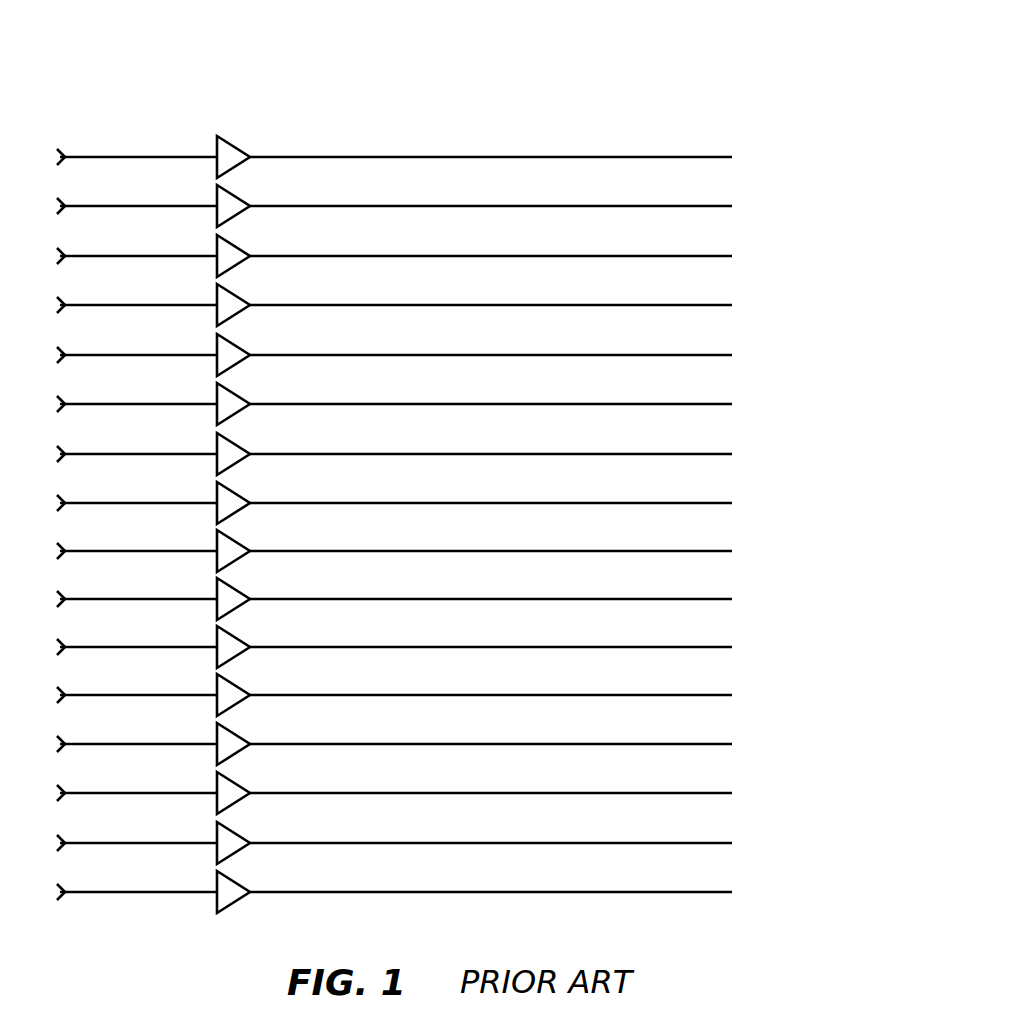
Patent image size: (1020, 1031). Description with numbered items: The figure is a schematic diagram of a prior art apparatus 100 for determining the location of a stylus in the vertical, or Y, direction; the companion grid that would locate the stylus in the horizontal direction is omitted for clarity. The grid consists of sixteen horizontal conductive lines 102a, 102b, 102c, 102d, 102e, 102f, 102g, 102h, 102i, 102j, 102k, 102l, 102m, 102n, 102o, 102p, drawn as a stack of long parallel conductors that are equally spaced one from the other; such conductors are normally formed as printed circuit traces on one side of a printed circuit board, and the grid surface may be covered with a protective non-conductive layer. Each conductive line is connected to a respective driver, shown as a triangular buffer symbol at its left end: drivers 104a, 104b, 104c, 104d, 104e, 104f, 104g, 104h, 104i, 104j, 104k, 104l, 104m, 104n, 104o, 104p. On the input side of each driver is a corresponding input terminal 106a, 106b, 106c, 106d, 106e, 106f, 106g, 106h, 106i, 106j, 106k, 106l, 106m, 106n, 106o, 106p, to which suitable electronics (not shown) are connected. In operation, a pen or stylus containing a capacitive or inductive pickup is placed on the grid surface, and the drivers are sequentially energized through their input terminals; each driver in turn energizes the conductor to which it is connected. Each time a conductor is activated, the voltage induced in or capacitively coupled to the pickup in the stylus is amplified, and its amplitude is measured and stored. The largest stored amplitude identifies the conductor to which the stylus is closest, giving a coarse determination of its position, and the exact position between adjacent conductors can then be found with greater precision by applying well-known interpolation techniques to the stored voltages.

The prior art apparatus 100 is at (431, 22).
The input terminal 106a is at (126, 156).
The input terminal 106b is at (126, 205).
The input terminal 106c is at (126, 255).
The input terminal 106d is at (126, 304).
The input terminal 106e is at (126, 354).
The input terminal 106f is at (126, 403).
The input terminal 106g is at (126, 453).
The input terminal 106h is at (126, 502).
The input terminal 106i is at (126, 550).
The input terminal 106j is at (126, 598).
The input terminal 106k is at (126, 646).
The input terminal 106l is at (126, 694).
The input terminal 106m is at (126, 743).
The input terminal 106n is at (126, 792).
The input terminal 106o is at (126, 842).
The input terminal 106p is at (126, 891).
The driver 104a is at (234, 146).
The driver 104b is at (234, 194).
The driver 104c is at (234, 244).
The driver 104d is at (234, 293).
The driver 104e is at (234, 343).
The driver 104f is at (234, 392).
The driver 104g is at (234, 442).
The driver 104h is at (234, 491).
The driver 104i is at (234, 539).
The driver 104j is at (234, 587).
The driver 104k is at (234, 635).
The driver 104l is at (234, 683).
The driver 104m is at (234, 732).
The driver 104n is at (234, 781).
The driver 104o is at (234, 831).
The driver 104p is at (234, 880).
The horizontal conductive line 102a is at (656, 157).
The horizontal conductive line 102b is at (658, 206).
The horizontal conductive line 102c is at (661, 256).
The horizontal conductive line 102d is at (663, 305).
The horizontal conductive line 102e is at (666, 355).
The horizontal conductive line 102f is at (668, 404).
The horizontal conductive line 102g is at (671, 454).
The horizontal conductive line 102h is at (673, 503).
The horizontal conductive line 102i is at (676, 551).
The horizontal conductive line 102j is at (678, 599).
The horizontal conductive line 102k is at (681, 647).
The horizontal conductive line 102l is at (683, 695).
The horizontal conductive line 102m is at (686, 744).
The horizontal conductive line 102n is at (688, 793).
The horizontal conductive line 102o is at (691, 843).
The horizontal conductive line 102p is at (693, 892).